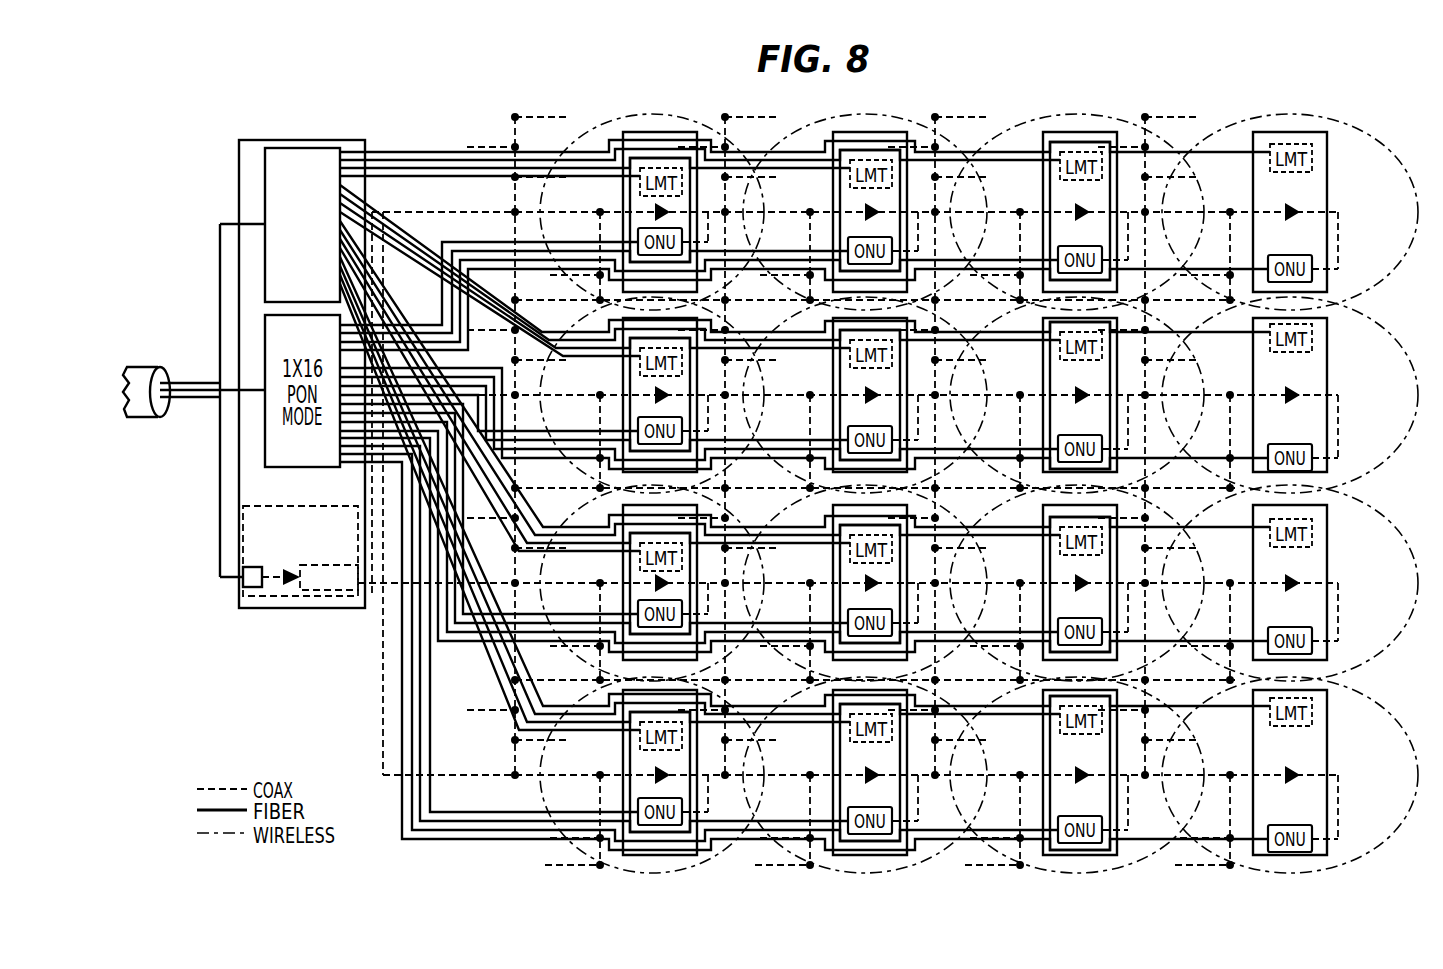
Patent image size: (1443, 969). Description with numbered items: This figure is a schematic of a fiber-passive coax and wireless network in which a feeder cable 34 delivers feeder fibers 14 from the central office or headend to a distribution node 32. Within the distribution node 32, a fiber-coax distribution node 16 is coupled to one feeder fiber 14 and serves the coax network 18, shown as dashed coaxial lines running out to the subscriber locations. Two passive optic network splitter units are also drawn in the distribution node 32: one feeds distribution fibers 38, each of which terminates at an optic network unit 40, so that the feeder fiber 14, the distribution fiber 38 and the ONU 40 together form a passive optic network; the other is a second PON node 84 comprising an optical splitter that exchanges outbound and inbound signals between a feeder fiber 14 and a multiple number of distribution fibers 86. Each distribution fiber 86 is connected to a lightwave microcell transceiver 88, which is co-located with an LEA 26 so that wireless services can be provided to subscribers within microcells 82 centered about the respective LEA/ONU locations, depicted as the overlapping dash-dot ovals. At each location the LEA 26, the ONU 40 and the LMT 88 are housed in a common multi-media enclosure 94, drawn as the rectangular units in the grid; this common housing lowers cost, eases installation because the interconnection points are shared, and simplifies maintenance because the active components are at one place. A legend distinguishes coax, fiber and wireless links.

The feeder fiber 14 is at (220, 252).
The fiber-coax distribution node 16 is at (287, 608).
The coax network 18 is at (370, 673).
The LEA 26 is at (1090, 220).
The distribution node 32 is at (247, 142).
The feeder cable 34 is at (137, 428).
The distribution fiber 38 is at (438, 243).
The optic network unit 40 is at (1314, 275).
The microcell 82 is at (880, 115).
The PON node 84 is at (303, 148).
The distribution fiber 86 is at (405, 144).
The lightwave microcell transceiver 88 is at (1057, 178).
The multi-media enclosure 94 is at (637, 132).